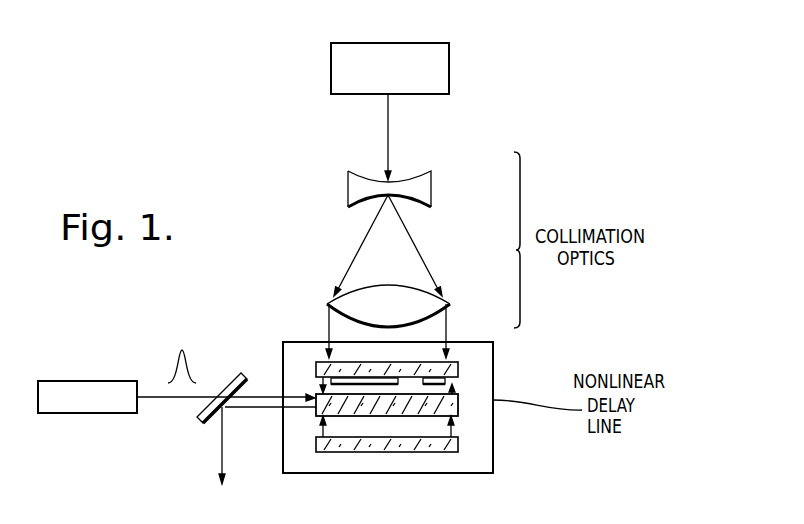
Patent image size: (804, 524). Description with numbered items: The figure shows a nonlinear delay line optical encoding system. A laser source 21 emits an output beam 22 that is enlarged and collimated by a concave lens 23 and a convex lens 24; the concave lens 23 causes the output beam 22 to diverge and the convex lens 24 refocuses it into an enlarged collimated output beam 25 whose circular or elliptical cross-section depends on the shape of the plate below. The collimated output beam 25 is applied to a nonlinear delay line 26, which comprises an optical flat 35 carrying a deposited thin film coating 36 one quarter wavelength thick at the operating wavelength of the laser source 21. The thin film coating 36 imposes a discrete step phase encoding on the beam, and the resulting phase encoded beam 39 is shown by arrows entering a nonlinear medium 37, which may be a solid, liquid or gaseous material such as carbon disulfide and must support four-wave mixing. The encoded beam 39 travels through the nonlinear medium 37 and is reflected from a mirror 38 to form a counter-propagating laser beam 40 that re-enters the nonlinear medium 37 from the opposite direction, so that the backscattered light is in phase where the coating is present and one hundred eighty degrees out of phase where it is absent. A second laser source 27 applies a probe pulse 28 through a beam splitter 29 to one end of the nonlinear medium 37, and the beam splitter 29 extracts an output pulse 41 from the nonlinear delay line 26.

The laser source 21 is at (449, 44).
The output beam 22 is at (388, 156).
The concave lens 23 is at (430, 206).
The convex lens 24 is at (450, 307).
The collimated output beam 25 is at (329, 327).
The nonlinear delay line 26 is at (493, 473).
The second laser source 27 is at (40, 413).
The probe pulse 28 is at (165, 398).
The beam splitter 29 is at (203, 425).
The optical flat 35 is at (458, 374).
The thin film coating 36 is at (444, 378).
The nonlinear medium 37 is at (458, 417).
The mirror 38 is at (458, 452).
The phase encoded beam 39 is at (452, 385).
The counter-propagating laser beam 40 is at (455, 431).
The output pulse 41 is at (224, 452).